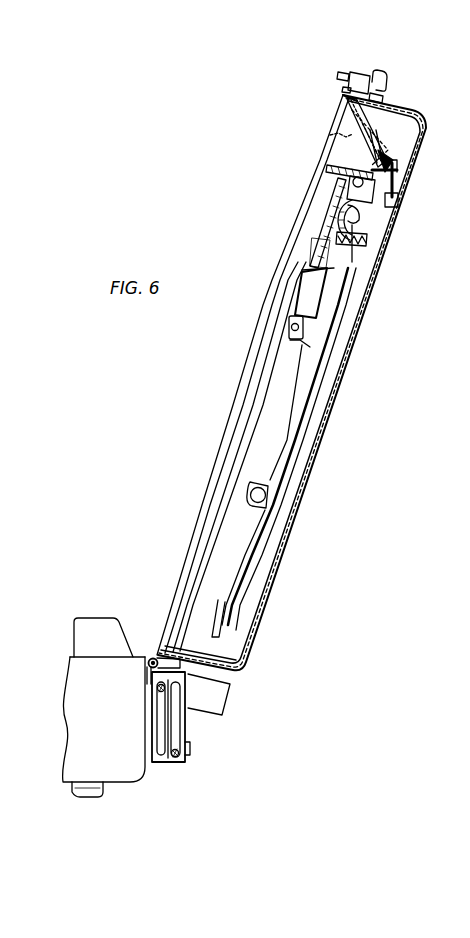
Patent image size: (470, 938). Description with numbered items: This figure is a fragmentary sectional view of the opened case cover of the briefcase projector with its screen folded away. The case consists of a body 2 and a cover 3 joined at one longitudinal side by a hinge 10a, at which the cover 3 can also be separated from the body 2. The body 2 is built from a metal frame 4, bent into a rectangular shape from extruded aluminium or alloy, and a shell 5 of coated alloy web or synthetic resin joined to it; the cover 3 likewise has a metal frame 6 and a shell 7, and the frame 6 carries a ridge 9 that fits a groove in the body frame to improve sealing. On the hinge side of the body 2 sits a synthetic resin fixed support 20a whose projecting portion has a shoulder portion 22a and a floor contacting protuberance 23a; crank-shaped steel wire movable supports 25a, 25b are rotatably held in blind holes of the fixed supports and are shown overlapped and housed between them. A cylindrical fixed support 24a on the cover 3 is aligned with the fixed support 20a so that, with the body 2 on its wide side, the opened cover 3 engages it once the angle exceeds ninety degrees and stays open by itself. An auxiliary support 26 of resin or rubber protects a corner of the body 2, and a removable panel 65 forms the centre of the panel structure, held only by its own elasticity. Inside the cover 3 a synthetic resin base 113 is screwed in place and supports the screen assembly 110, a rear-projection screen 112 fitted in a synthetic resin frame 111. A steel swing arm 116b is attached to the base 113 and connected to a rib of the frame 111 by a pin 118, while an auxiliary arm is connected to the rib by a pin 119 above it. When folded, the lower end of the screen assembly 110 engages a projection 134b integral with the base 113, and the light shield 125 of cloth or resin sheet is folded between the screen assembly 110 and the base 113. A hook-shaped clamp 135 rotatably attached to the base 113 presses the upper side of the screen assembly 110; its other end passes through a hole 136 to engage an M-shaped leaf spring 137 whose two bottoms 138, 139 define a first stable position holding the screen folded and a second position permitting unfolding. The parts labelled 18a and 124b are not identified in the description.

The body 2 is at (122, 786).
The cover 3 is at (430, 110).
The metal frame 4 is at (139, 648).
The shell 5 is at (112, 791).
The metal frame 6 is at (337, 77).
The shell 7 is at (423, 128).
The ridge 9 is at (345, 95).
The hinge 10a is at (153, 658).
The latch bracket 18a is at (358, 70).
The fixed support 20a is at (186, 725).
The shoulder portion 22a is at (165, 763).
The floor contacting protuberance 23a is at (191, 748).
The fixed support 24a is at (225, 700).
The movable support 25a is at (182, 763).
The movable support 25b is at (175, 764).
The auxiliary support 26 is at (85, 795).
The removable panel 65 is at (93, 623).
The screen assembly 110 is at (263, 407).
The frame 111 is at (326, 206).
The rear-projection screen 112 is at (312, 238).
The base 113 is at (405, 110).
The swing arm 116b is at (329, 292).
The pin 118 is at (266, 493).
The pin 119 is at (289, 327).
The slider foot 124b is at (222, 633).
The light shield 125 is at (364, 222).
The projection 134b is at (215, 600).
The clamp 135 is at (327, 162).
The hole 136 is at (388, 148).
The leaf spring 137 is at (398, 162).
The bottom 138 is at (396, 185).
The bottom 139 is at (360, 213).